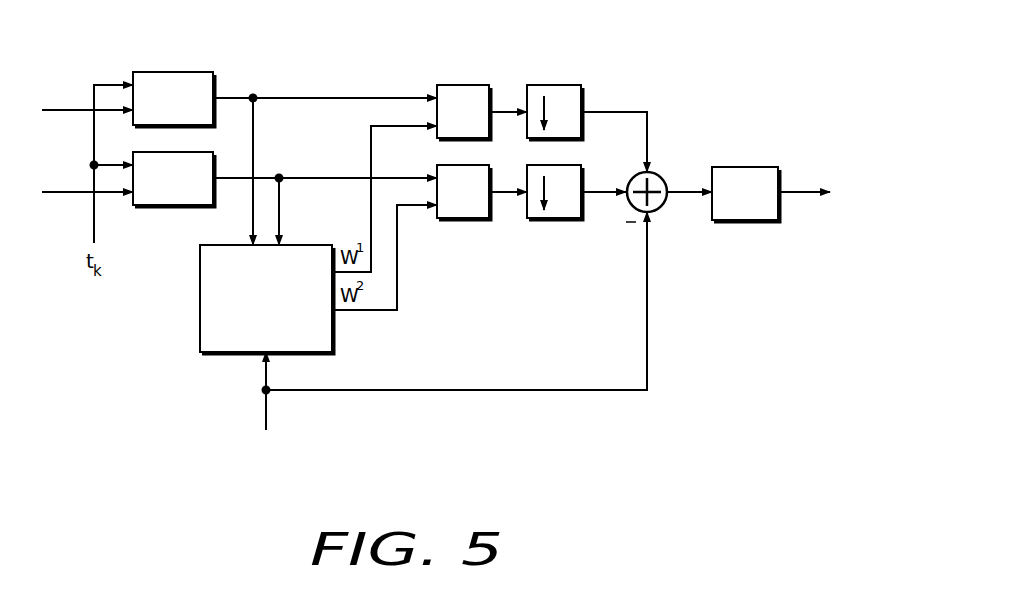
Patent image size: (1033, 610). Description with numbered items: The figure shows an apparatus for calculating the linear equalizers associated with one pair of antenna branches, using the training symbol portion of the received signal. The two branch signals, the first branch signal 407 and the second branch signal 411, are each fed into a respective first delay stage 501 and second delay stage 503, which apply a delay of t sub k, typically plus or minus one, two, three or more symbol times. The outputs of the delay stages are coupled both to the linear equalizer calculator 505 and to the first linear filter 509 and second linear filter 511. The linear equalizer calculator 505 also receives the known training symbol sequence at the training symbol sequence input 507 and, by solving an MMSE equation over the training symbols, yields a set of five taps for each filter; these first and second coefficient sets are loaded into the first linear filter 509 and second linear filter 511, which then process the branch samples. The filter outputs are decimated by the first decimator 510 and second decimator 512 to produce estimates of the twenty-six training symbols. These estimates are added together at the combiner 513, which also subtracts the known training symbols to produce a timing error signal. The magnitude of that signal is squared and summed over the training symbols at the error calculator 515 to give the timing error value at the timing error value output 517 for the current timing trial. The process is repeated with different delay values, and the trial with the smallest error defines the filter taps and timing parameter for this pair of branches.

The first branch signal 407 is at (77, 111).
The second branch signal 411 is at (62, 196).
The first delay stage 501 is at (185, 72).
The second delay stage 503 is at (156, 208).
The linear equalizer calculator 505 is at (311, 244).
The training symbol sequence input 507 is at (259, 413).
The first linear filter 509 is at (471, 85).
The first decimator 510 is at (563, 85).
The second linear filter 511 is at (473, 220).
The second decimator 512 is at (564, 220).
The combiner 513 is at (665, 206).
The error calculator 515 is at (760, 167).
The timing error value output 517 is at (805, 190).